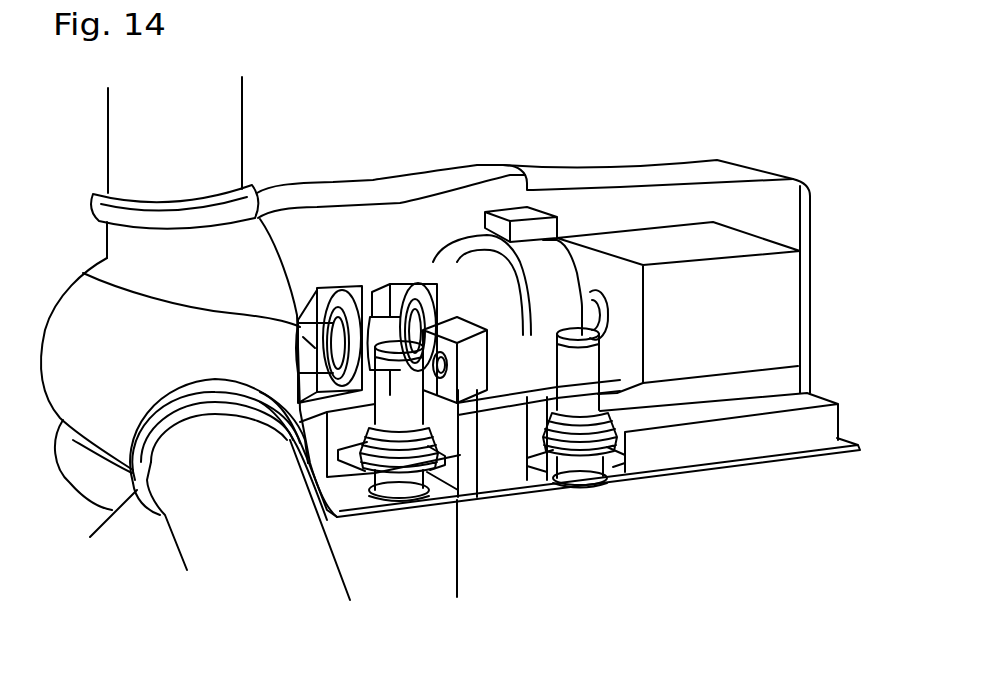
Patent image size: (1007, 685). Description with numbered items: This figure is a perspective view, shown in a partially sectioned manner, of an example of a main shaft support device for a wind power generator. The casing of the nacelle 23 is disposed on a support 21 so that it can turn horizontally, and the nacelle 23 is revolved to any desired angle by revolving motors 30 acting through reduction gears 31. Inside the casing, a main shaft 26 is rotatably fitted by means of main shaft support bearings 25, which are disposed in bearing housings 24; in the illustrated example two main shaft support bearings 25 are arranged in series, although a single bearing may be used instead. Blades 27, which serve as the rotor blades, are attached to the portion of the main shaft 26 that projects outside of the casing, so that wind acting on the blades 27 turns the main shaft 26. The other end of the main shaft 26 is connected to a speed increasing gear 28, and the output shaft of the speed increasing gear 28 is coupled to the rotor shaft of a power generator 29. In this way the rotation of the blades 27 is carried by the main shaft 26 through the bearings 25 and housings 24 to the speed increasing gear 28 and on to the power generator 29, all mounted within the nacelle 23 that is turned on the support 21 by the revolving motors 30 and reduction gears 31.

The support 21 is at (440, 563).
The nacelle 23 is at (633, 166).
The bearing housing 24 is at (323, 287).
The main shaft support bearing 25 is at (345, 293).
The main shaft 26 is at (100, 282).
The blade 27 is at (117, 140).
The speed increasing gear 28 is at (547, 280).
The power generator 29 is at (693, 337).
The revolving motor 30 is at (412, 412).
The reduction gear 31 is at (392, 507).